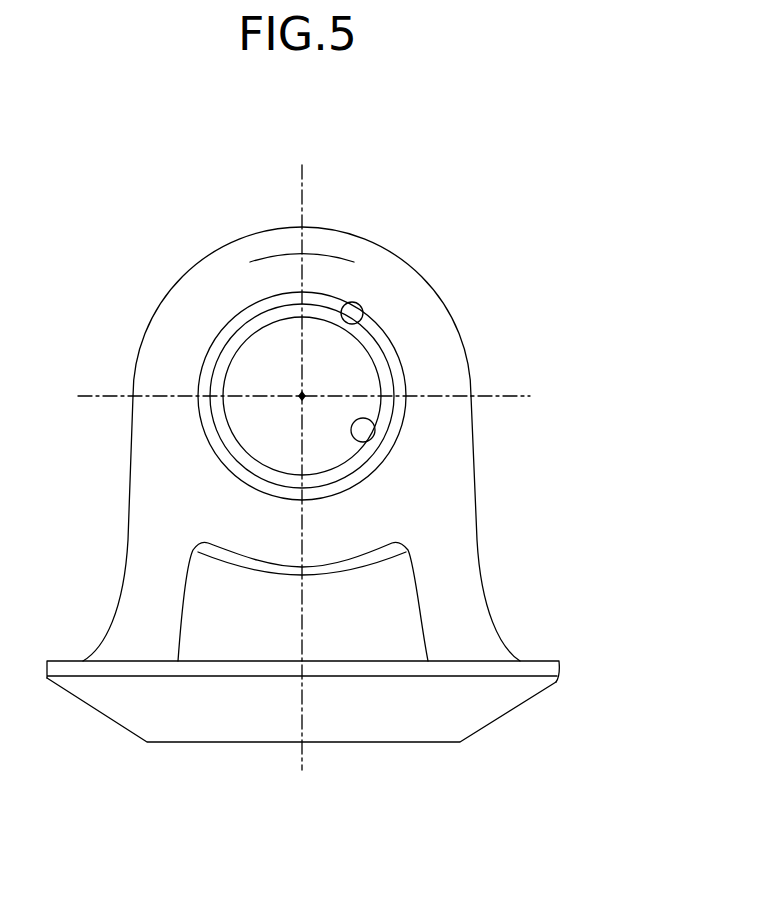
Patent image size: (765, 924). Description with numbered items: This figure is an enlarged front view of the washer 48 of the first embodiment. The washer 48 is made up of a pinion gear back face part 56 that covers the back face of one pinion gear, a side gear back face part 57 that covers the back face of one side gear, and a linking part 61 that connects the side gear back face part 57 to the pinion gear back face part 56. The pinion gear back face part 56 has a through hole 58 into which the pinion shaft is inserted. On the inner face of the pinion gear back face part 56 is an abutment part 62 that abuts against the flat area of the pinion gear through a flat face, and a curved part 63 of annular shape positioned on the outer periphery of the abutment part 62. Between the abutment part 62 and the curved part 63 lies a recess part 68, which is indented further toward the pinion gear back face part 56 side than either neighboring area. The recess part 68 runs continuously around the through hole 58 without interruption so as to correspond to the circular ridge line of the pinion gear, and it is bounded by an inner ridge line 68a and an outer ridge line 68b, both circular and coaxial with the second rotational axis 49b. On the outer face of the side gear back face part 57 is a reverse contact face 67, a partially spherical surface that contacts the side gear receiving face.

The washer 48 is at (456, 276).
The second rotational axis 49b is at (302, 396).
The pinion gear back face part 56 is at (457, 325).
The side gear back face part 57 is at (560, 670).
The through hole 58 is at (366, 441).
The linking part 61 is at (484, 575).
The abutment part 62 is at (223, 440).
The curved part 63 is at (330, 247).
The reverse contact face 67 is at (512, 715).
The recess part 68 is at (360, 322).
The inner ridge line 68a is at (245, 320).
The outer ridge line 68b is at (205, 353).